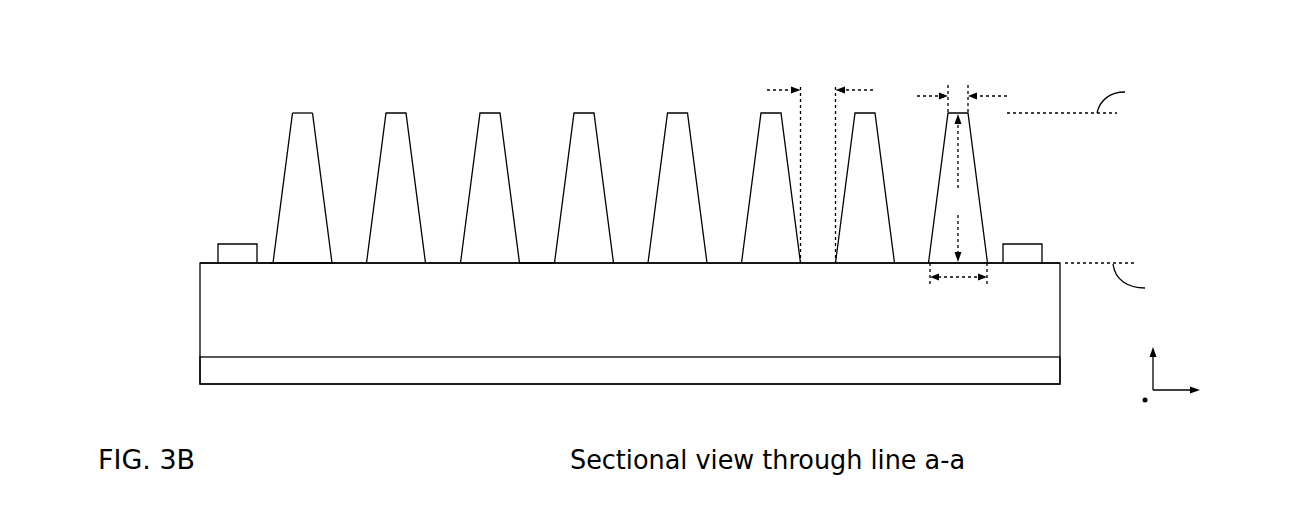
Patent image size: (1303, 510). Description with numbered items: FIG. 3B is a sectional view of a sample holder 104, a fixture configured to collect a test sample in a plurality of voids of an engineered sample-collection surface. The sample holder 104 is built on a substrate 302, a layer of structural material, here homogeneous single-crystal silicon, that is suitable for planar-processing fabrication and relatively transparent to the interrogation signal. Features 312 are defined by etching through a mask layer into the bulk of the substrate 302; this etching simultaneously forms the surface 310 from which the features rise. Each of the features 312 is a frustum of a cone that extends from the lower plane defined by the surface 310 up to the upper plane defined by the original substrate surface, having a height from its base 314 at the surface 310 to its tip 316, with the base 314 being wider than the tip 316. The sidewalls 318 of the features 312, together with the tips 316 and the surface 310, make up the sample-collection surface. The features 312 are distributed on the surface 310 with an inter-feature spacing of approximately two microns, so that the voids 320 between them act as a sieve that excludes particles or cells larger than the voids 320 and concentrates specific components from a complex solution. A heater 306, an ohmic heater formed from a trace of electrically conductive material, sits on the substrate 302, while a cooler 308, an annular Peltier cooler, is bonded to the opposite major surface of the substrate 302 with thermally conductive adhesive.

The sample holder 104 is at (192, 109).
The substrate 302 is at (442, 343).
The heater 306 is at (1023, 253).
The cooler 308 is at (668, 384).
The surface 310 is at (539, 275).
The features 312 is at (971, 140).
The base 314 is at (292, 247).
The tip 316 is at (303, 103).
The sidewall 318 is at (327, 147).
The voids 320 is at (538, 120).